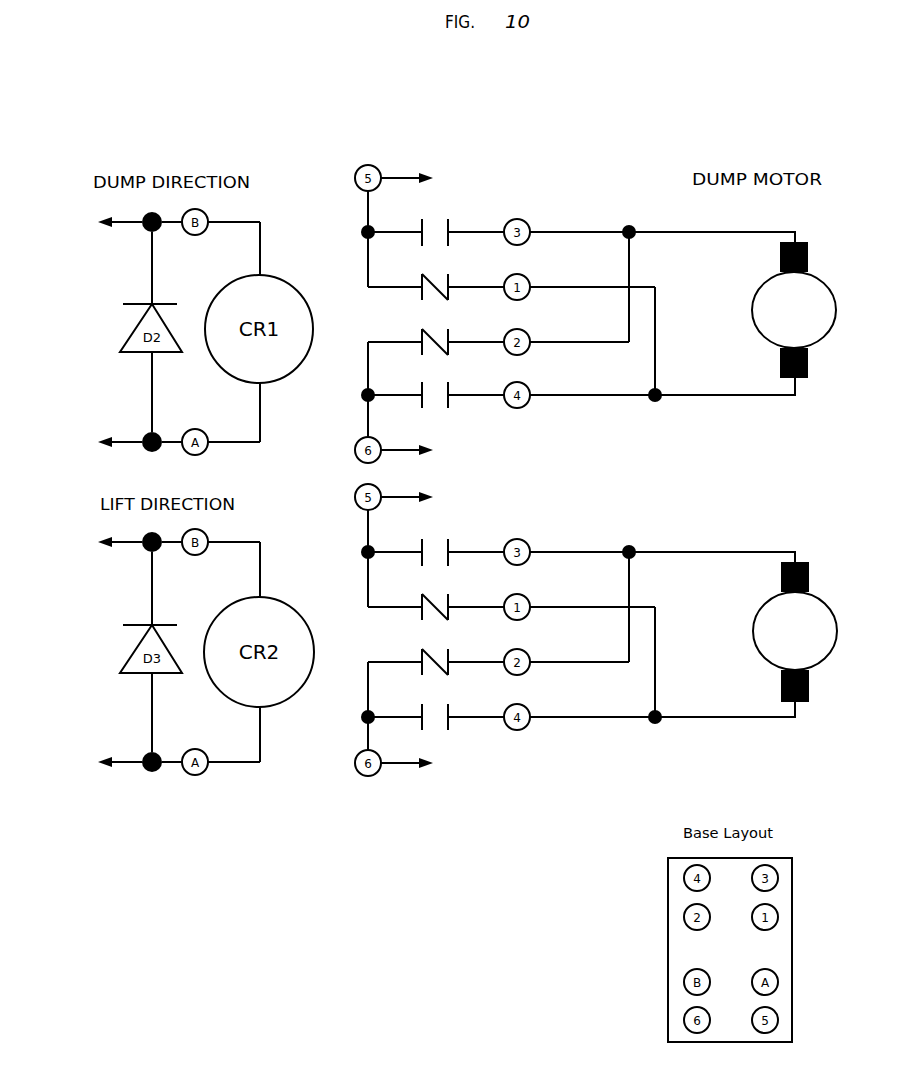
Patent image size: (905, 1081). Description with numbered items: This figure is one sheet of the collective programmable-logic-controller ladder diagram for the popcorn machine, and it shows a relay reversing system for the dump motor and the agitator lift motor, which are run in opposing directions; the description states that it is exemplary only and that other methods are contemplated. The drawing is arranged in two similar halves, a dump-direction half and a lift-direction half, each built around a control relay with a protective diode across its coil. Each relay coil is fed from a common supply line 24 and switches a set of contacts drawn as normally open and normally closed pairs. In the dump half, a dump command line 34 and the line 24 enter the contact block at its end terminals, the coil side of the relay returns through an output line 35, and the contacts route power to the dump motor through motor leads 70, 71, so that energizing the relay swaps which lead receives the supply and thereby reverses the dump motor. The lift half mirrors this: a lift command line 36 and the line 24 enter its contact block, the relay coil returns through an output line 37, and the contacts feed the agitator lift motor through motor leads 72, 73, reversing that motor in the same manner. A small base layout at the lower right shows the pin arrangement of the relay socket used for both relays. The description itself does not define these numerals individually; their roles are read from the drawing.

The power supply (battery positive) connection 24 is at (267, 493).
The dump control signal input 34 is at (427, 178).
The dump relay output 35 is at (101, 442).
The lift control signal input 36 is at (427, 497).
The lift relay output 37 is at (101, 762).
The dump motor first lead 70 is at (712, 242).
The dump motor second lead 71 is at (725, 383).
The lift motor first lead 72 is at (712, 565).
The lift motor second lead 73 is at (725, 705).